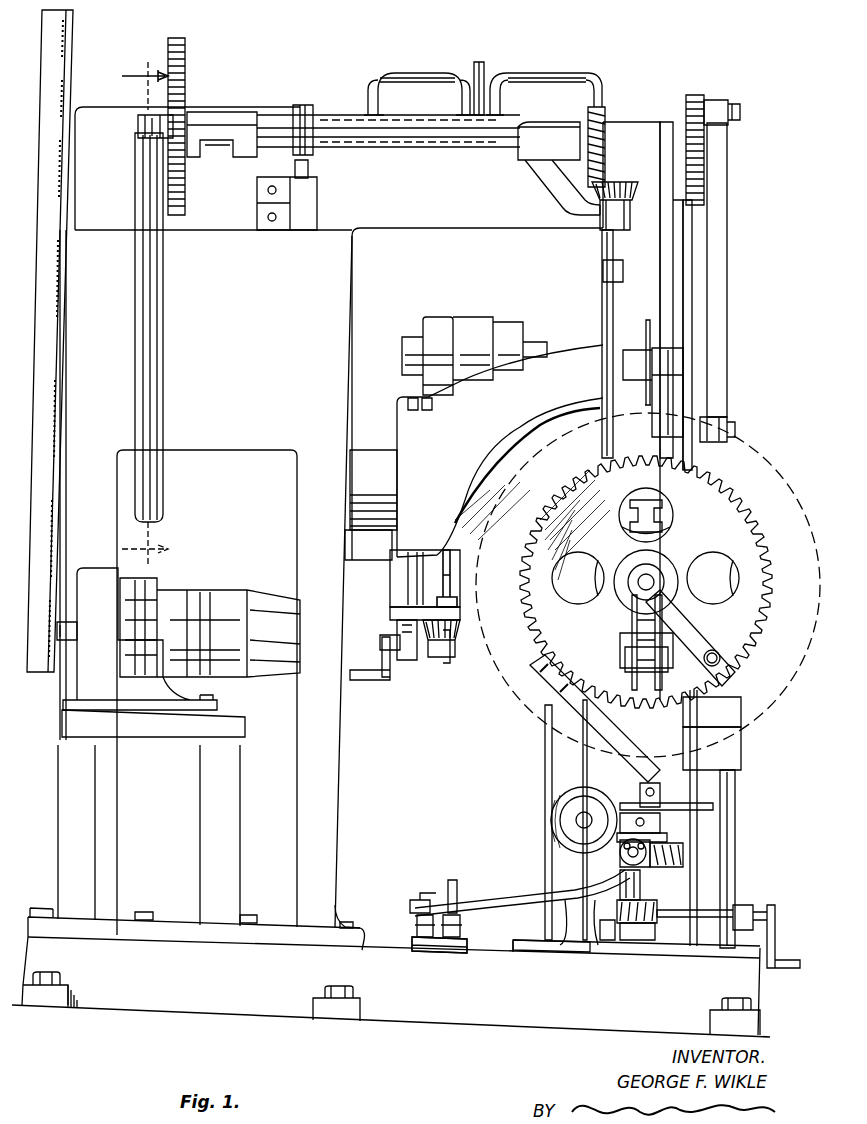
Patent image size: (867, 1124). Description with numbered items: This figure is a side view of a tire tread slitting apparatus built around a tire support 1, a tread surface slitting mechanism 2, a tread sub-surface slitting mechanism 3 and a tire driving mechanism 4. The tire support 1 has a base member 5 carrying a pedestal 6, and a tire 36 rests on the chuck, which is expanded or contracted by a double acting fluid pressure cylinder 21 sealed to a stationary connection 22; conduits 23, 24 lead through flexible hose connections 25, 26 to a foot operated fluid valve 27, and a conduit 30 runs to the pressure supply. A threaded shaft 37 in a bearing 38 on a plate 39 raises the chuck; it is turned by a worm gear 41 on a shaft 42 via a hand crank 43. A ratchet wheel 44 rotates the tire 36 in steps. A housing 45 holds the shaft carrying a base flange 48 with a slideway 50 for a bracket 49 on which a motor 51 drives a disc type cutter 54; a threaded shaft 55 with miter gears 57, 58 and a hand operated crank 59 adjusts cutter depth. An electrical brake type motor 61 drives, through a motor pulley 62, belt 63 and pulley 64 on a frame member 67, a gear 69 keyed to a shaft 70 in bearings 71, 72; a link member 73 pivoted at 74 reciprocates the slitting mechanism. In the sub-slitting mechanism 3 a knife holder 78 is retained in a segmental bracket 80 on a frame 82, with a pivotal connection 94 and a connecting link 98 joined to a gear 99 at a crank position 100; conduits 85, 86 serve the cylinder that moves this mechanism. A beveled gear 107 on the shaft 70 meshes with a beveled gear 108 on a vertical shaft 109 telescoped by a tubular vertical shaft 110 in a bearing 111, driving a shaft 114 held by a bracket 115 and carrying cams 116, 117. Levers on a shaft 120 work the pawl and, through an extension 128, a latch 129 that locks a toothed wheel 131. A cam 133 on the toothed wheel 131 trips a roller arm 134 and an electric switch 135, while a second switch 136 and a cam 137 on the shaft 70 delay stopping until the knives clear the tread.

The tire support 1 is at (755, 832).
The tread surface slitting mechanism 2 is at (511, 306).
The tread sub-surface slitting mechanism 3 is at (742, 350).
The tire driving mechanism 4 is at (528, 690).
The base member 5 is at (122, 1002).
The pedestal 6 is at (738, 822).
The double acting fluid pressure cylinder 21 is at (652, 572).
The stationary connection 22 is at (650, 552).
The conduit 23 is at (635, 615).
The conduit 24 is at (662, 678).
The flexible hose connection 25 is at (570, 893).
The flexible hose connection 26 is at (590, 950).
The foot operated fluid valve 27 is at (410, 945).
The conduit 30 is at (452, 900).
The tire 36 is at (770, 432).
The threaded shaft 37 is at (640, 895).
The bearing 38 is at (645, 945).
The plate 39 is at (558, 950).
The worm gear 41 is at (635, 945).
The shaft 42 is at (718, 910).
The hand crank 43 is at (778, 930).
The ratchet wheel 44 is at (629, 650).
The housing 45 is at (363, 526).
The base flange 48 is at (380, 465).
The bracket 49 is at (420, 440).
The slideway 50 is at (410, 592).
The motor 51 is at (462, 335).
The disc type cutter 54 is at (645, 335).
The threaded shaft 55 is at (450, 586).
The miter gear 57 is at (445, 663).
The miter gear 58 is at (420, 660).
The hand operated crank 59 is at (360, 680).
The electrical brake type motor 61 is at (181, 639).
The motor pulley 62 is at (25, 660).
The belt 63 is at (66, 8).
The pulley 64 is at (70, 48).
The frame member 67 is at (440, 238).
The gear 69 is at (178, 38).
The shaft 70 is at (335, 128).
The bearing 71 is at (222, 112).
The bearing 72 is at (556, 160).
The link member 73 is at (158, 331).
The pivotal attachment 74 is at (140, 125).
The knife holder 78 is at (668, 396).
The segmental bracket 80 is at (700, 455).
The frame 82 is at (683, 270).
The conduit 85 is at (426, 72).
The conduit 86 is at (540, 78).
The pivotal connection 94 is at (735, 426).
The connecting link 98 is at (722, 200).
The gear 99 is at (696, 95).
The crank position 100 is at (738, 112).
The beveled gear 107 is at (580, 114).
The beveled gear 108 is at (616, 182).
The vertical shaft 109 is at (605, 262).
The tubular vertical shaft 110 is at (603, 282).
The bearing 111 is at (640, 750).
The shaft 114 is at (615, 808).
The bracket 115 is at (584, 820).
The cam 116 is at (615, 865).
The cam 117 is at (617, 838).
The shaft 120 is at (662, 792).
The extension 128 is at (592, 718).
The latch 129 is at (545, 672).
The toothed wheel 131 is at (540, 563).
The cam 133 is at (725, 680).
The roller arm 134 is at (740, 730).
The electric switch 135 is at (740, 758).
The second switch 136 is at (302, 224).
The cam 137 is at (298, 105).